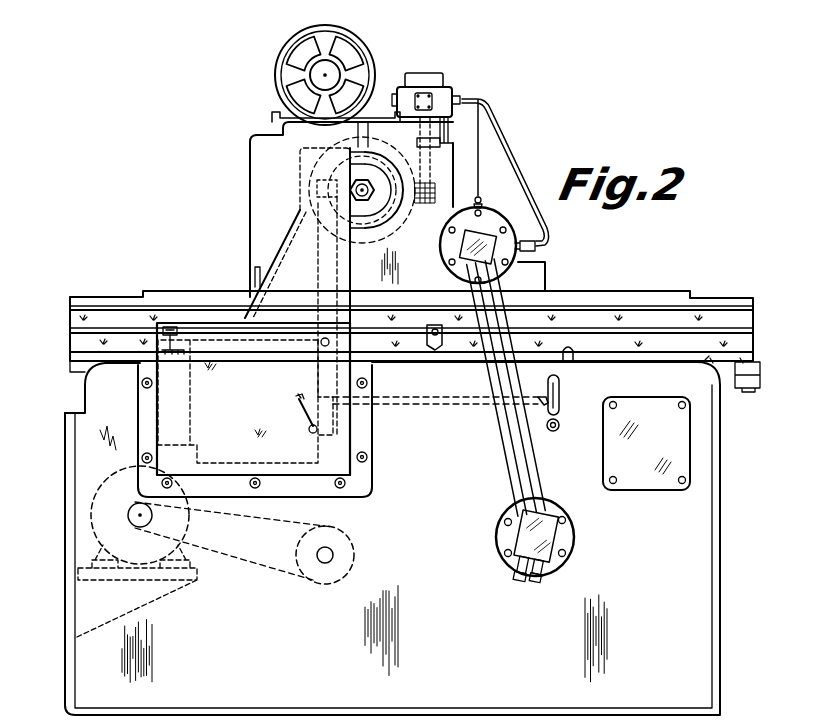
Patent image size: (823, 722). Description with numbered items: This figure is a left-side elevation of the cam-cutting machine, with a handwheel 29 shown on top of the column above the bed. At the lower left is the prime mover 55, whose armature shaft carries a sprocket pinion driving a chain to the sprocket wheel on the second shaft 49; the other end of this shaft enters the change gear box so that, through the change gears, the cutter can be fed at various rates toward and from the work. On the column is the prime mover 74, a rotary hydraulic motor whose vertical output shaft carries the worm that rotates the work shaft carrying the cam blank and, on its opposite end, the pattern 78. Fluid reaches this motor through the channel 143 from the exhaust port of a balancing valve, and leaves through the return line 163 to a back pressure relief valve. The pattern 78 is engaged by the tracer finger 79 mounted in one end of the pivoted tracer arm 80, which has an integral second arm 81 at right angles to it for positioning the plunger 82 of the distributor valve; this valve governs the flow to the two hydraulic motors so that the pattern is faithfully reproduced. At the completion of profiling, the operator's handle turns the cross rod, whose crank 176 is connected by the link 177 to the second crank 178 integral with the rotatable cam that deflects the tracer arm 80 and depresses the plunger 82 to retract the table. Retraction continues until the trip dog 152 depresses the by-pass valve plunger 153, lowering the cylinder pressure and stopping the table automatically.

The handwheel 29 is at (282, 85).
The prime mover 74 is at (447, 95).
The channel 143 is at (498, 131).
The return line 163 is at (479, 170).
The pattern 78 is at (385, 212).
The tracer finger 79 is at (318, 194).
The tracer arm 80 is at (325, 252).
The second arm 81 is at (236, 340).
The plunger 82 is at (180, 352).
The second crank 178 is at (302, 408).
The link 177 is at (400, 407).
The trip dog 152 is at (432, 348).
The by-pass valve plunger 153 is at (572, 352).
The crank 176 is at (549, 420).
The prime mover 55 is at (100, 513).
The second shaft 49 is at (320, 558).